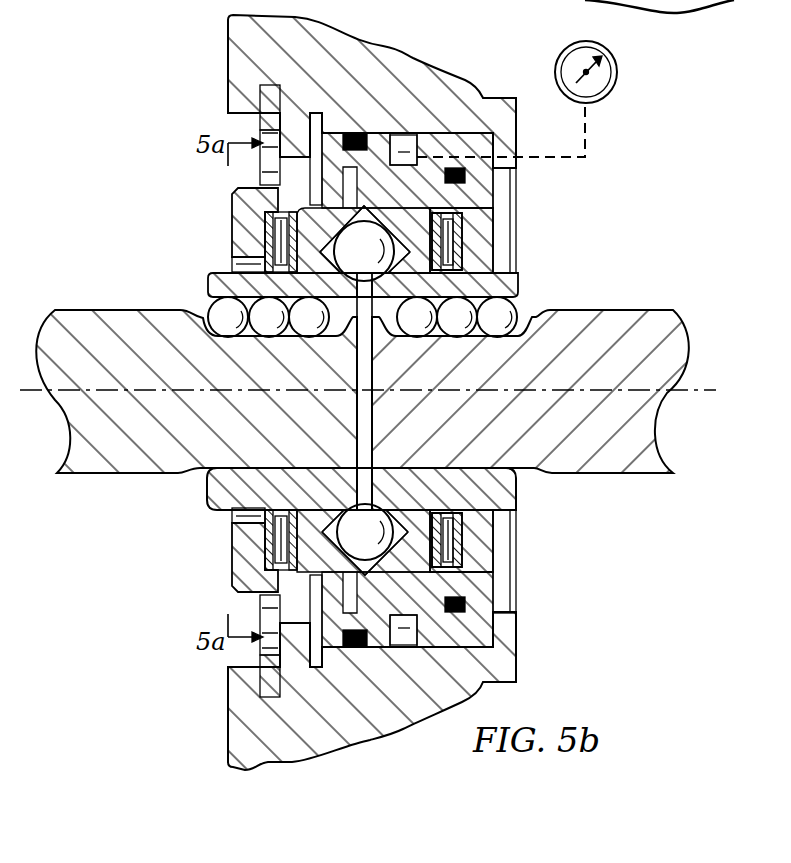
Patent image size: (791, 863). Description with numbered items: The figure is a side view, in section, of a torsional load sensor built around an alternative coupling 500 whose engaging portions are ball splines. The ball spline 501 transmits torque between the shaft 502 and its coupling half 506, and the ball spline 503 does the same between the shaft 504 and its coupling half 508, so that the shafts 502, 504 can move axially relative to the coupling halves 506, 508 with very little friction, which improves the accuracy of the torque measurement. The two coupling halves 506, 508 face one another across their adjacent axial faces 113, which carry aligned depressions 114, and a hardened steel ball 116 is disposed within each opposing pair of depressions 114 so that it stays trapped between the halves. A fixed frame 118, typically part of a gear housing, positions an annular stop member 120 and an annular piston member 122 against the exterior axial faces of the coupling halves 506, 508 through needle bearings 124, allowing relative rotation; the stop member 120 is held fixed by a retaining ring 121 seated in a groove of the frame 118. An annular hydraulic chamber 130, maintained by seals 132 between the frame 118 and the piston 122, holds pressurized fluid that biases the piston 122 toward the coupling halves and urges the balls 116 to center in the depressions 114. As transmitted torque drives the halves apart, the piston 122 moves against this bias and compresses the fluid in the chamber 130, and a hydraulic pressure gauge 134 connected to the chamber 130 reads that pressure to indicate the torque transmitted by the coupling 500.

The axial faces 113 is at (355, 334).
The depressions 114 is at (337, 522).
The ball 116 is at (447, 560).
The fixed frame 118 is at (227, 67).
The annular stop member 120 is at (232, 197).
The retaining ring 121 is at (260, 92).
The annular piston member 122 is at (500, 203).
The needle bearings 124 is at (275, 228).
The annular hydraulic chamber 130 is at (403, 140).
The seals 132 is at (456, 613).
The hydraulic pressure gauge 134 is at (620, 72).
The alternative coupling 500 is at (605, 217).
The ball spline 501 is at (210, 312).
The shaft 502 is at (77, 310).
The ball spline 503 is at (510, 310).
The shaft 504 is at (624, 310).
The coupling half 506 is at (218, 507).
The coupling half 508 is at (503, 492).